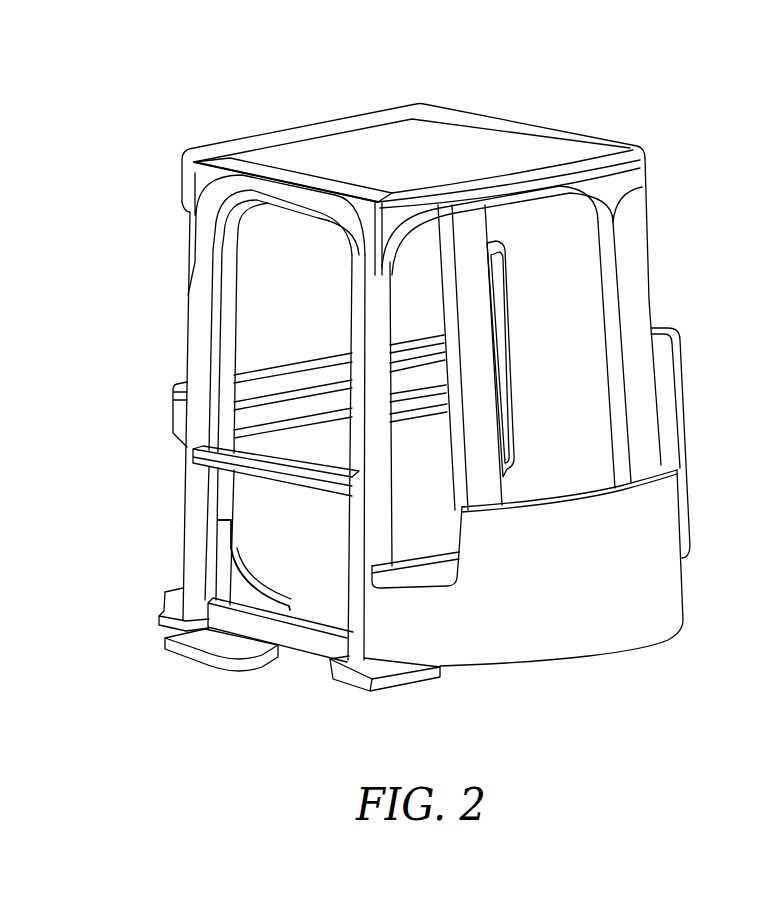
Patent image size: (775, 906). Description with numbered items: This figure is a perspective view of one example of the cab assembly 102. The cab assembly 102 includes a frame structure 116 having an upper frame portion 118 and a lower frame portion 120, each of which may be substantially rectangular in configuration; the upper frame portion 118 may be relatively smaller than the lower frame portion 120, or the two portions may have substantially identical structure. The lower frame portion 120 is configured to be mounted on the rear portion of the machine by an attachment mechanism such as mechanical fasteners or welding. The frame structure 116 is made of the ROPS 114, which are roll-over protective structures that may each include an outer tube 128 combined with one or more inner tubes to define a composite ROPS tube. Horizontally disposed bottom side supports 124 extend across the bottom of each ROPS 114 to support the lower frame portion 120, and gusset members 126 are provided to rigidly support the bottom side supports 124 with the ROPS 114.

The cab assembly 102 is at (178, 66).
The ROPS 114 is at (184, 290).
The frame structure 116 is at (677, 266).
The upper frame portion 118 is at (387, 147).
The lower frame portion 120 is at (437, 573).
The bottom side support 124 is at (308, 617).
The gusset member 126 is at (240, 587).
The outer tube 128 is at (635, 437).